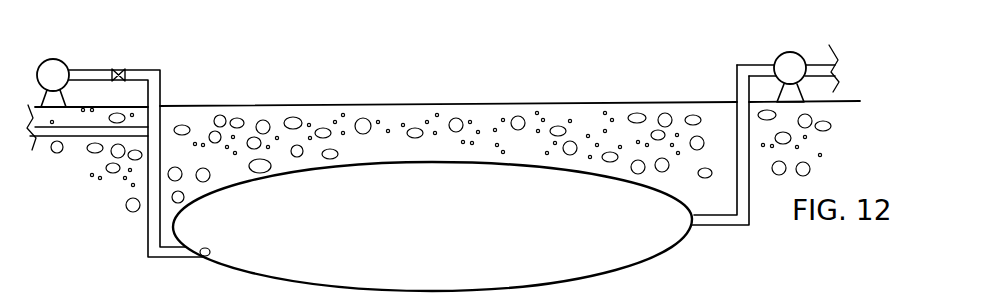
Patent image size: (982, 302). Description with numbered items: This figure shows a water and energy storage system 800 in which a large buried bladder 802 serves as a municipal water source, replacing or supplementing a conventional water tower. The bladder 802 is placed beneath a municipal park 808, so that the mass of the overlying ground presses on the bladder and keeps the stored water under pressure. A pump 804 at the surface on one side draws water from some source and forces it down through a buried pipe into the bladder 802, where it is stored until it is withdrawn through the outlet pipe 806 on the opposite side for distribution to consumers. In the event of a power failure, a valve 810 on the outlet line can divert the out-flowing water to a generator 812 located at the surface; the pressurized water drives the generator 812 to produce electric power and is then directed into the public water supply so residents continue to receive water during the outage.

The water and energy storage system 800 is at (367, 59).
The bladder 802 is at (347, 285).
The pump 804 is at (789, 66).
The outlet pipe 806 is at (152, 227).
The municipal park 808 is at (510, 103).
The valve 810 is at (122, 71).
The generator 812 is at (53, 74).